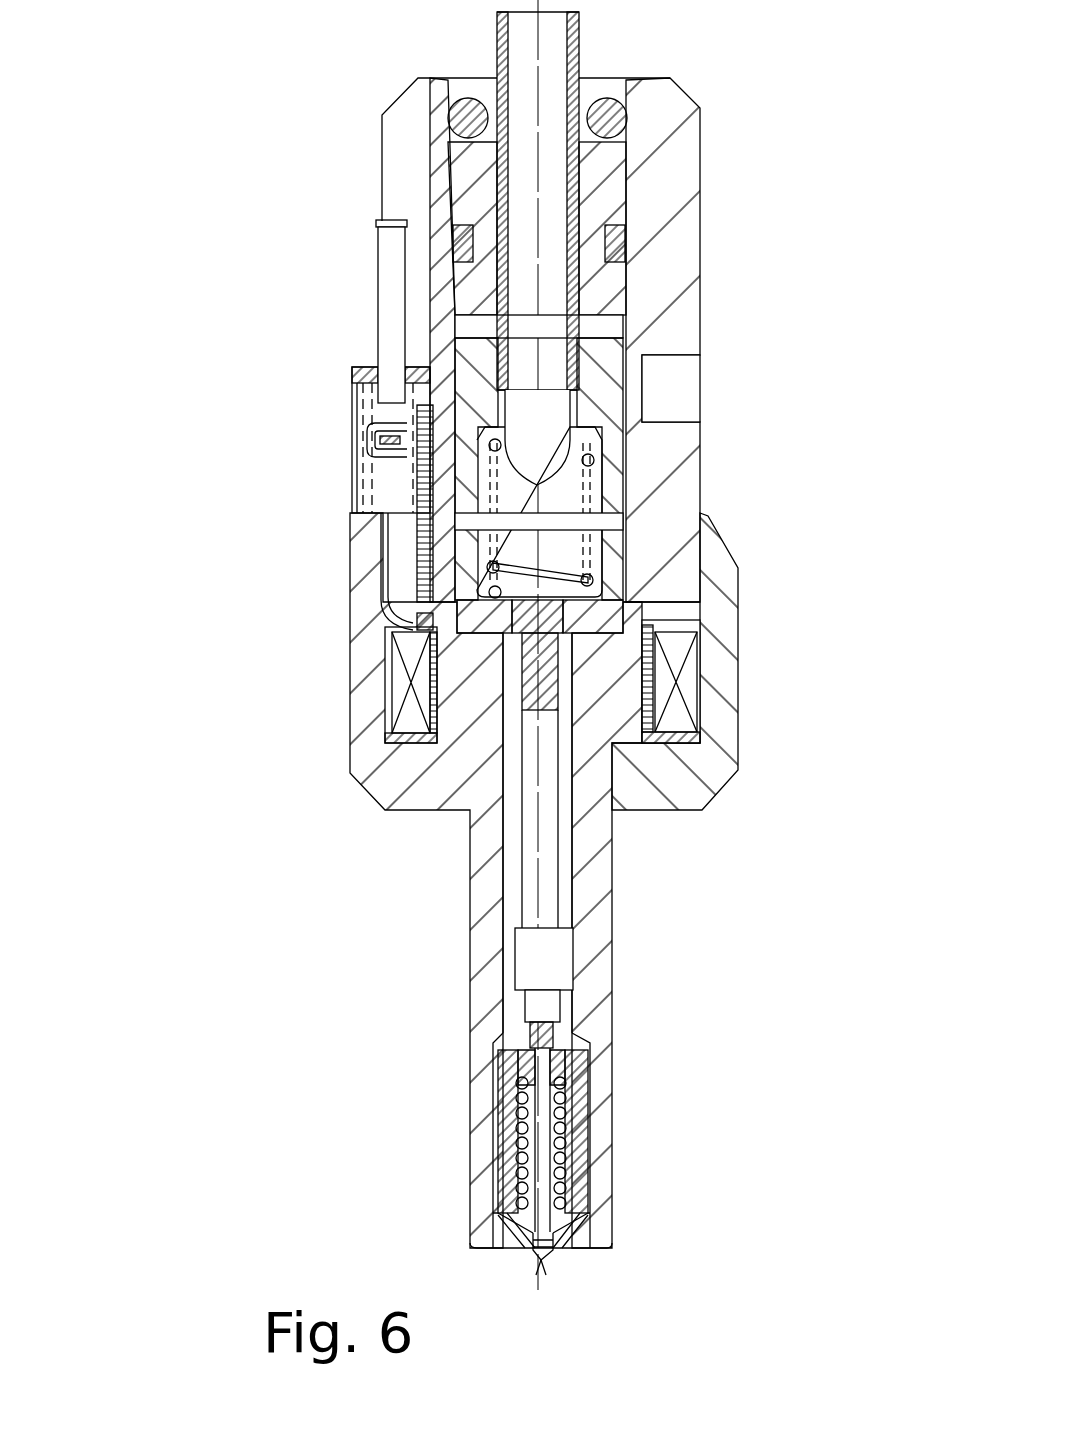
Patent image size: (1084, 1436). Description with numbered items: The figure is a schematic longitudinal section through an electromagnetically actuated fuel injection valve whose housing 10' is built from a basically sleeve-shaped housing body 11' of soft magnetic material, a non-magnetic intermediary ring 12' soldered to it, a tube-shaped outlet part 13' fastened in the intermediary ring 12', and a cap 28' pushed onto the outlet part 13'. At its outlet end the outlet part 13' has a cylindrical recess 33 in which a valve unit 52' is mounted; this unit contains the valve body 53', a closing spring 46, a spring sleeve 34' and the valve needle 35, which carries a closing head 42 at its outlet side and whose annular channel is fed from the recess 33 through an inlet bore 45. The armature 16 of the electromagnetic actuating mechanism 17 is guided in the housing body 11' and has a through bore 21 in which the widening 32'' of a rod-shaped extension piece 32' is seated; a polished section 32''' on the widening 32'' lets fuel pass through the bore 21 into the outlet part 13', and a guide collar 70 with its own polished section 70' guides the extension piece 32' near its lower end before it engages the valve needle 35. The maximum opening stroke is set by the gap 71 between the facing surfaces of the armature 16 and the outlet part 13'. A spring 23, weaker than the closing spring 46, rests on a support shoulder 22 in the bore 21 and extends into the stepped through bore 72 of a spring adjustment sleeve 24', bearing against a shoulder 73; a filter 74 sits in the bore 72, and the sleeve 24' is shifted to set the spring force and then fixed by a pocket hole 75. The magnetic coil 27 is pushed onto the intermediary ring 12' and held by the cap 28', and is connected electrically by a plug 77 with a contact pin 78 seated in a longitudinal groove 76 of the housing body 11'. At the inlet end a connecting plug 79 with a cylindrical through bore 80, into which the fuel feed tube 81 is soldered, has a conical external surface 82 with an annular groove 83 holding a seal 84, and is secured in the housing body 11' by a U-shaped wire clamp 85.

The housing 10' is at (669, 925).
The housing body 11' is at (734, 556).
The intermediary ring 12' is at (362, 651).
The outlet part 13' is at (359, 880).
The armature 16 is at (452, 600).
The electromagnetic actuating mechanism 17 is at (710, 600).
The through bore 21 is at (565, 559).
The support shoulder 22 is at (490, 588).
The spring 23 is at (643, 485).
The spring adjustment sleeve 24' is at (676, 499).
The magnetic coil 27 is at (410, 705).
The cap 28' is at (769, 664).
The extension piece 32' is at (394, 833).
The widening 32'' is at (714, 627).
The polished section 32''' is at (712, 656).
The recess 33 is at (510, 1040).
The spring sleeve 34' is at (667, 1123).
The valve needle 35 is at (580, 1217).
The closing head 42 is at (545, 1260).
The inlet bore 45 is at (578, 1252).
The closing spring 46 is at (562, 1173).
The valve unit 52' is at (645, 1106).
The valve body 53' is at (698, 1131).
The guide collar 70 is at (400, 1037).
The polished section 70' is at (429, 959).
The gap 71 is at (413, 618).
The stepped through bore 72 is at (508, 473).
The shoulder 73 is at (597, 437).
The filter 74 is at (550, 410).
The pocket hole 75 is at (665, 378).
The longitudinal groove 76 is at (416, 204).
The plug 77 is at (352, 472).
The contact pin 78 is at (391, 262).
The connecting plug 79 is at (480, 173).
The cylindrical through bore 80 is at (595, 160).
The fuel feed tube 81 is at (498, 59).
The conical external surface 82 is at (630, 287).
The annular groove 83 is at (455, 272).
The seal 84 is at (607, 237).
The wire clamp 85 is at (628, 98).